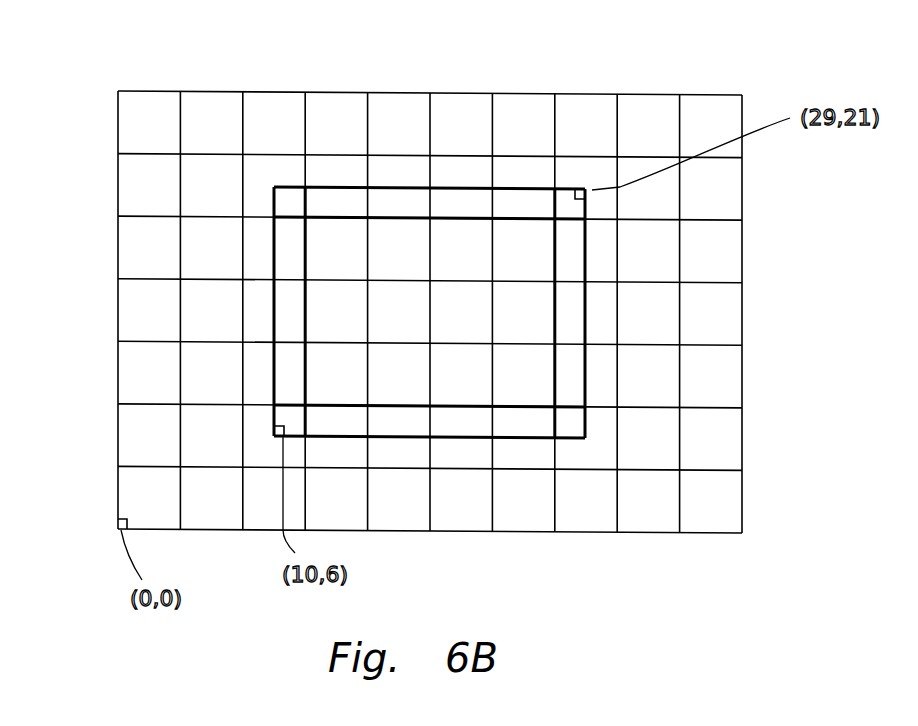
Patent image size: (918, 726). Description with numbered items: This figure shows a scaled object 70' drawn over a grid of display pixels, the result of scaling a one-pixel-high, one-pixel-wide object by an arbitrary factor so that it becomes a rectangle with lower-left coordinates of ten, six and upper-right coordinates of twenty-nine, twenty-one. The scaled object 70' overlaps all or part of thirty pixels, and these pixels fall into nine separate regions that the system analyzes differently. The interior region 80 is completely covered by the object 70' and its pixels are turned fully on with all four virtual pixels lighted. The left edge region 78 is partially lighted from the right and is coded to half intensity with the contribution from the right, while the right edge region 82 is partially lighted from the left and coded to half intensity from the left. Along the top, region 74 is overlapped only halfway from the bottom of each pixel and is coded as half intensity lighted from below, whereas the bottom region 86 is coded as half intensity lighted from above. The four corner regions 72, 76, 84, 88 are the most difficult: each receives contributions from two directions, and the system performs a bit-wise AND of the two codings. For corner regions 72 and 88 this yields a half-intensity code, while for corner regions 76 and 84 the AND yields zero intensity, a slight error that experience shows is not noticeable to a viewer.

The scaled object 70' is at (480, 312).
The corner region 72 is at (292, 185).
The top edge region 74 is at (517, 187).
The corner region 76 is at (565, 188).
The left edge region 78 is at (272, 305).
The interior region 80 is at (555, 318).
The right edge region 82 is at (586, 385).
The corner region 84 is at (270, 413).
The bottom edge region 86 is at (462, 438).
The corner region 88 is at (586, 426).